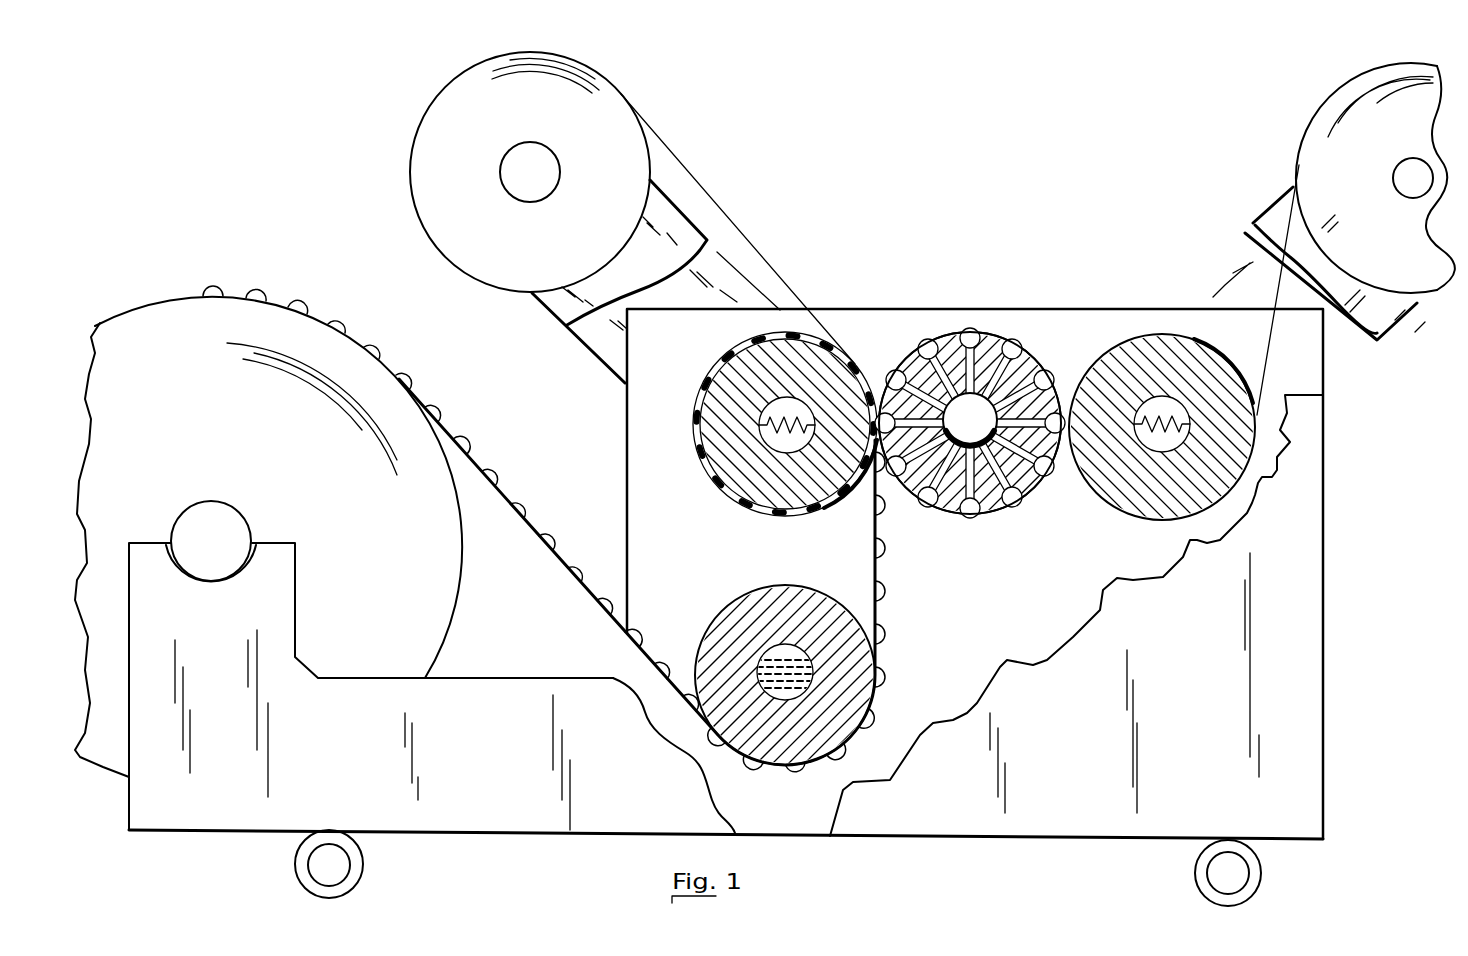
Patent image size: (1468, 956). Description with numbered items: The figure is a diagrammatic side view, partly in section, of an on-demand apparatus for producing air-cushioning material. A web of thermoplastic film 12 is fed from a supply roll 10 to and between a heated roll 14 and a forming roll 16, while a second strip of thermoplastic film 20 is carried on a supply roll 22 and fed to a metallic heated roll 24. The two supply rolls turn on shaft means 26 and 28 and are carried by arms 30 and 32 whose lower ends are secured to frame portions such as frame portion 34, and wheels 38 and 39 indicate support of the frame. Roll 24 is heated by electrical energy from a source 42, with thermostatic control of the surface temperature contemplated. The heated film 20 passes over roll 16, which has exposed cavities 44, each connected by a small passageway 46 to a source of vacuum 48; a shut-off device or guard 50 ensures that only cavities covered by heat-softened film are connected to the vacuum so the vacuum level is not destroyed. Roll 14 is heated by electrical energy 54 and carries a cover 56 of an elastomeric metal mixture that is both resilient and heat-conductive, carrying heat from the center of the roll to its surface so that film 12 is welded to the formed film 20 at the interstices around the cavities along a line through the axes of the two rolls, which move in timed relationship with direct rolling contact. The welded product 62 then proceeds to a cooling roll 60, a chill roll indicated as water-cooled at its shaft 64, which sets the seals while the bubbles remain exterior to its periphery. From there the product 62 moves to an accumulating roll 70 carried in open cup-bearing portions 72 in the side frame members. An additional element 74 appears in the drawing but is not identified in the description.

The supply roll 10 is at (427, 120).
The web of film 12 is at (720, 207).
The heated roll 14 is at (717, 398).
The forming roll 16 is at (946, 512).
The strip of thermoplastic film 20 is at (1295, 192).
The supply roll 22 is at (1310, 141).
The heated roll 24 is at (1118, 355).
The shaft means 26 is at (503, 168).
The shaft means 28 is at (1416, 200).
The arm 30 is at (577, 338).
The arm 32 is at (1349, 349).
The frame portion 34 is at (1304, 623).
The wheel 38 is at (337, 866).
The wheel 39 is at (1248, 873).
The source of electrical energy 42 is at (1190, 428).
The cavities 44 is at (973, 509).
The passageway 46 is at (1014, 477).
The source of vacuum 48 is at (946, 410).
The shut-off device or guard 50 is at (973, 432).
The electrical energy 54 is at (762, 437).
The cover 56 is at (720, 370).
The cooling roll 60 is at (720, 614).
The product 62 is at (536, 455).
The shaft 64 is at (795, 645).
The accumulating roll 70 is at (235, 312).
The open cup-bearing portions 72 is at (220, 508).
The roller support 74 is at (228, 582).